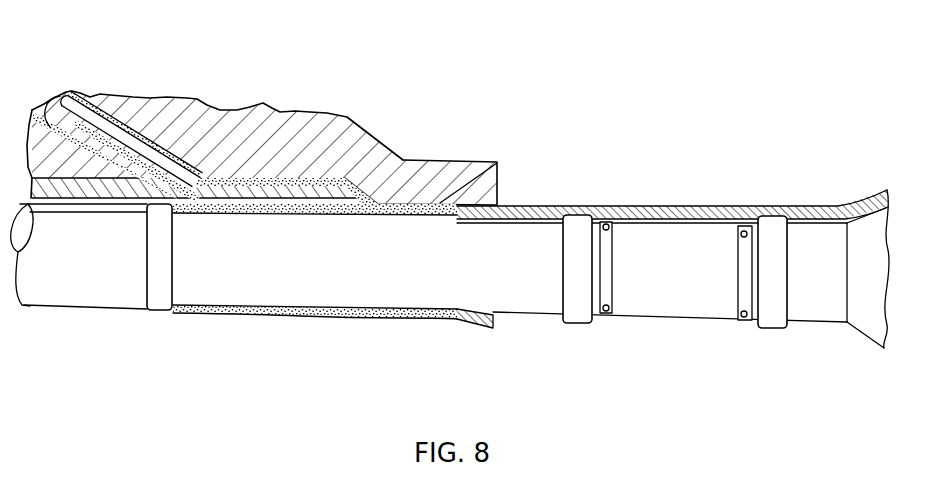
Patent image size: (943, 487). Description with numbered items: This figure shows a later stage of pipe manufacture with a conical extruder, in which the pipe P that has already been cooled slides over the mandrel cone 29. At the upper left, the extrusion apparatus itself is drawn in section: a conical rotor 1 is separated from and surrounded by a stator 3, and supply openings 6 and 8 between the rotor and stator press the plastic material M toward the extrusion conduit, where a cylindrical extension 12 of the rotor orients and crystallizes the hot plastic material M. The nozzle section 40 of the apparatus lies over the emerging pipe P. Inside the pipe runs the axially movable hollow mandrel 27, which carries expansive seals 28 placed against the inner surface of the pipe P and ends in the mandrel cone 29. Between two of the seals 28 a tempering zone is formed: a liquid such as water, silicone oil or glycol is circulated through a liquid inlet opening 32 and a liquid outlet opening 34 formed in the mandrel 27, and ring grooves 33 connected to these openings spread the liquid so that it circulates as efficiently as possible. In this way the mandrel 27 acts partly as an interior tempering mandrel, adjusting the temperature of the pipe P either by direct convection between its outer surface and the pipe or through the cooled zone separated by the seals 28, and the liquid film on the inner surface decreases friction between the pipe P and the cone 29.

The conical rotor 1 is at (139, 132).
The stator 3 is at (274, 140).
The supply opening 6 is at (36, 118).
The supply opening 8 is at (176, 163).
The cylindrical extension 12 is at (258, 178).
The plastic material M is at (50, 103).
The mandrel 27 is at (92, 288).
The expansive seal 28 is at (160, 312).
The mandrel cone 29 is at (882, 230).
The liquid inlet opening 32 is at (742, 235).
The ring groove 33 is at (606, 252).
The liquid outlet opening 34 is at (608, 308).
The nozzle section 40 is at (463, 173).
The pipe P is at (647, 207).